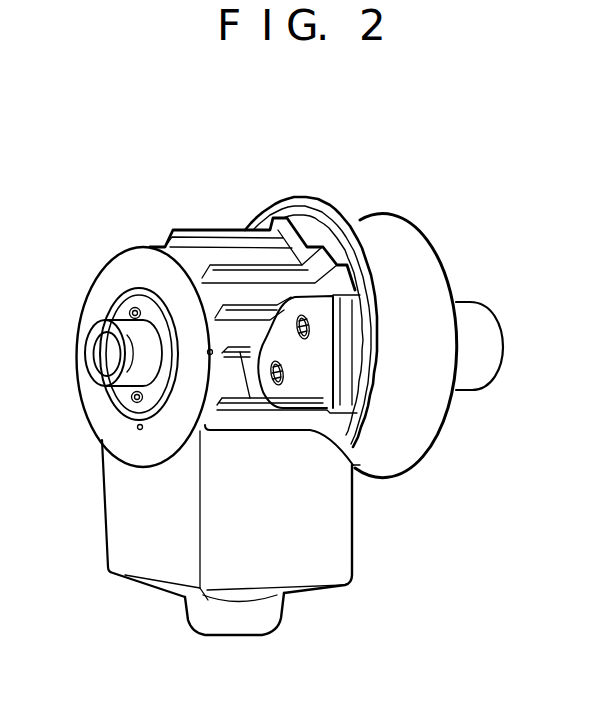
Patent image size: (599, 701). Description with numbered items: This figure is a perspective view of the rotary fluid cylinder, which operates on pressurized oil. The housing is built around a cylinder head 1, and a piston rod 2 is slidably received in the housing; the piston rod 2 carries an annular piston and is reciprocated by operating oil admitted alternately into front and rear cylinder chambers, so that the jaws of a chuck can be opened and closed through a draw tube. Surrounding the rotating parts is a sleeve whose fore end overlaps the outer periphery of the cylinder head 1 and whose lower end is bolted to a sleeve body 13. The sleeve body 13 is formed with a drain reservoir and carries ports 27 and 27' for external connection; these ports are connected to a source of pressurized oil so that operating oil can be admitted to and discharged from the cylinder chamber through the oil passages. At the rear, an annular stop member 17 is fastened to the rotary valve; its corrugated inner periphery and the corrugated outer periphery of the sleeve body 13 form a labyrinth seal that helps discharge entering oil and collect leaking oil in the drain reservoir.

The cylinder head 1 is at (408, 252).
The piston rod 2 is at (463, 317).
The sleeve body 13 is at (213, 252).
The annular stop member 17 is at (127, 412).
The port 27 is at (331, 417).
The port 27' is at (396, 375).